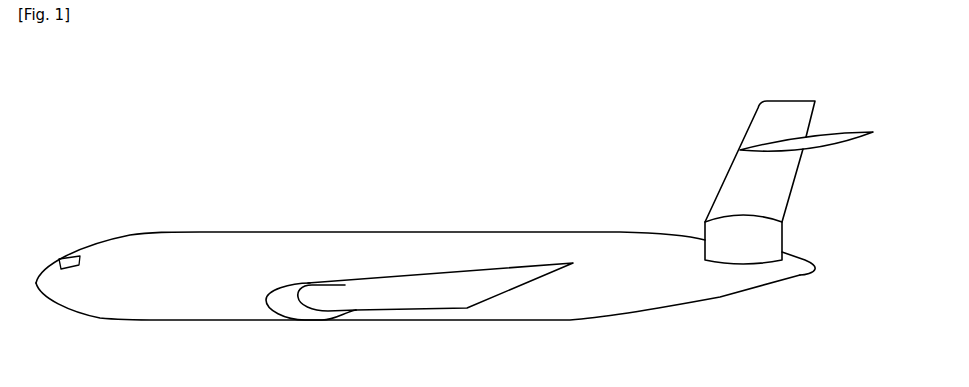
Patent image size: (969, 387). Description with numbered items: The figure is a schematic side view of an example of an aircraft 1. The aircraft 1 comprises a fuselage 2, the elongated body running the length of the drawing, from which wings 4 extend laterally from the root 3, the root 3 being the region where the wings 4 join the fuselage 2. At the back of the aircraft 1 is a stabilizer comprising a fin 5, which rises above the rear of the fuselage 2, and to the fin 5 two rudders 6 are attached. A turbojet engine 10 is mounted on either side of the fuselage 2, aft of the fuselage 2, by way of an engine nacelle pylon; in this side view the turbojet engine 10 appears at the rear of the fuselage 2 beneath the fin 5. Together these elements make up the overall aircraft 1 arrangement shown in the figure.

The aircraft 1 is at (210, 128).
The fuselage 2 is at (180, 281).
The root 3 is at (288, 305).
The wings 4 is at (428, 297).
The fin 5 is at (733, 184).
The rudders 6 is at (828, 140).
The turbojet engine 10 is at (740, 272).